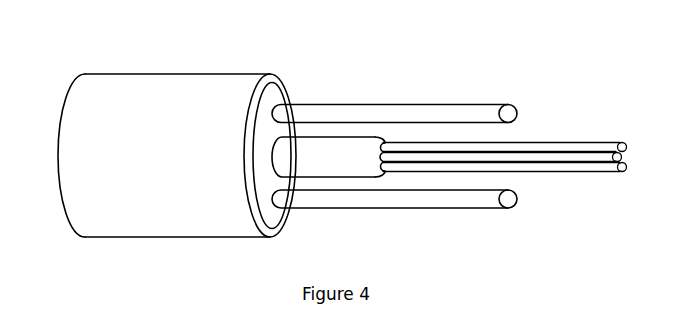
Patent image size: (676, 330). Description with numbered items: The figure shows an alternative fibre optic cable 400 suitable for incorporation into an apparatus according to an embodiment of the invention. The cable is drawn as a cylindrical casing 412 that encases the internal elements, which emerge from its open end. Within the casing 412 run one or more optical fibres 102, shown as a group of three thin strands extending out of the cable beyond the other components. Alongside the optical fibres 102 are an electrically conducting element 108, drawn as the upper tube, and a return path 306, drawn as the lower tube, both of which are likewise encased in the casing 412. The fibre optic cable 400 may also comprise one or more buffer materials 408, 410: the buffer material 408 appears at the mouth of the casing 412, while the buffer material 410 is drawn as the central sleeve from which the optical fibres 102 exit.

The fibre optic cable 400 is at (560, 38).
The casing 412 is at (275, 83).
The buffer material 408 is at (272, 218).
The electrically conducting element 108 is at (418, 107).
The return path 306 is at (423, 203).
The buffer material 410 is at (335, 147).
The optical fibres 102 is at (590, 143).